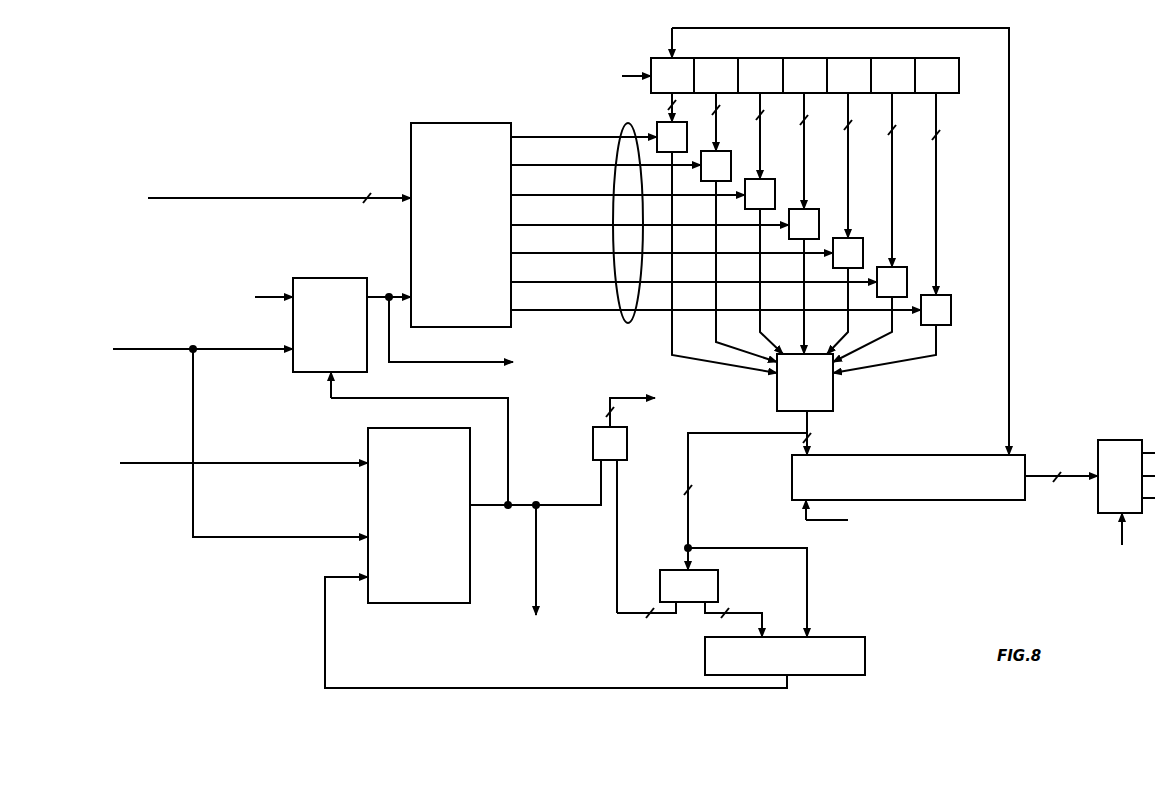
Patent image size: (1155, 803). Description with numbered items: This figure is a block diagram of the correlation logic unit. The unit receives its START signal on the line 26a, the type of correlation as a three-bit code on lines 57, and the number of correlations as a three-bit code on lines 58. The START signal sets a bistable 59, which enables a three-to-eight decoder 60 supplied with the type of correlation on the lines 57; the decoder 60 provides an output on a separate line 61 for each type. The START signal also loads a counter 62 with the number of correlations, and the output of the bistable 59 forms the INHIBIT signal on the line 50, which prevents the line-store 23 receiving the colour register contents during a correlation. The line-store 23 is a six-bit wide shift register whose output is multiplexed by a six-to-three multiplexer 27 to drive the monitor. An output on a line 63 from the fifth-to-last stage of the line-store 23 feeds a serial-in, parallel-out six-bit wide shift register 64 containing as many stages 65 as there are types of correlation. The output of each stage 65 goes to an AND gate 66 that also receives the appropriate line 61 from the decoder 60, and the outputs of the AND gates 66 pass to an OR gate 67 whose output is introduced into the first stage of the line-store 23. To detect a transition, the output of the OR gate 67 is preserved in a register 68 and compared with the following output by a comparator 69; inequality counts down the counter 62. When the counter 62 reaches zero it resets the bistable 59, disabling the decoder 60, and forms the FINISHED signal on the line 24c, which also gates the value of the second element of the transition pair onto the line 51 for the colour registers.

The lines 57 is at (220, 199).
The line 26a is at (254, 350).
The bistable 59 is at (334, 278).
The line 50 is at (461, 366).
The 3-to-8 decoder 60 is at (410, 139).
The line 61 is at (716, 232).
The shift register 64 is at (945, 60).
The stages 65 is at (770, 58).
The line 63 is at (1010, 181).
The AND gate 66 is at (774, 181).
The OR gate 67 is at (833, 399).
The line-store 23 is at (972, 455).
The 6-to-3 multiplexer 27 is at (1118, 440).
The register 68 is at (667, 570).
The comparator 69 is at (851, 636).
The counter 62 is at (466, 437).
The lines 58 is at (173, 464).
The line 24c is at (540, 591).
The line 51 is at (632, 398).